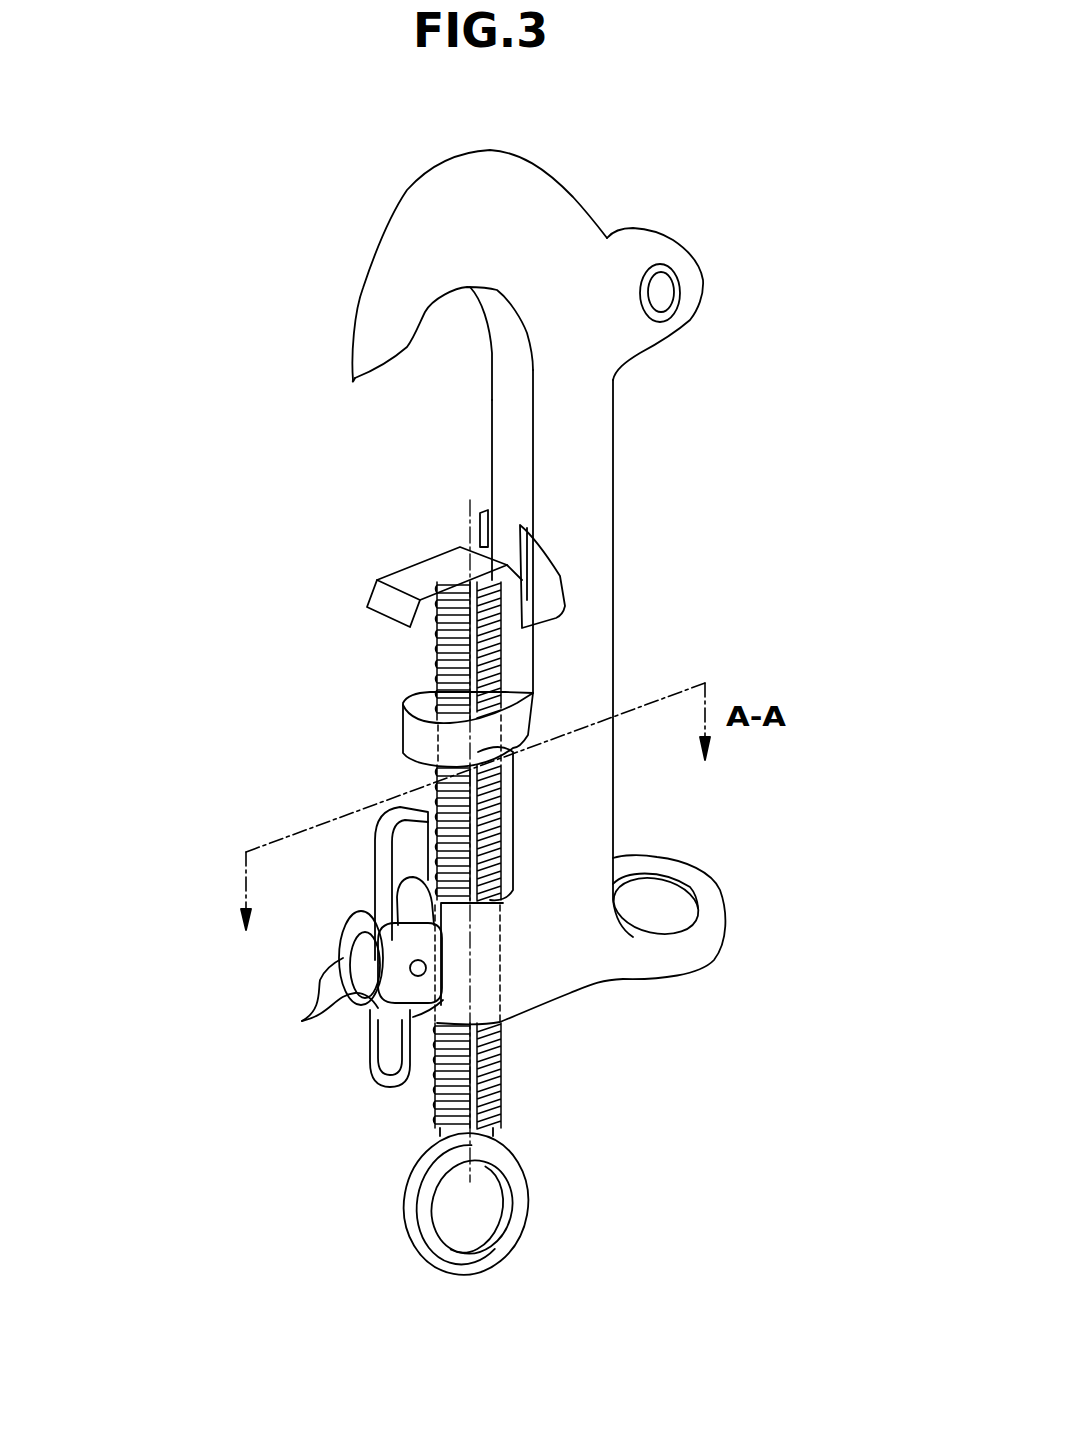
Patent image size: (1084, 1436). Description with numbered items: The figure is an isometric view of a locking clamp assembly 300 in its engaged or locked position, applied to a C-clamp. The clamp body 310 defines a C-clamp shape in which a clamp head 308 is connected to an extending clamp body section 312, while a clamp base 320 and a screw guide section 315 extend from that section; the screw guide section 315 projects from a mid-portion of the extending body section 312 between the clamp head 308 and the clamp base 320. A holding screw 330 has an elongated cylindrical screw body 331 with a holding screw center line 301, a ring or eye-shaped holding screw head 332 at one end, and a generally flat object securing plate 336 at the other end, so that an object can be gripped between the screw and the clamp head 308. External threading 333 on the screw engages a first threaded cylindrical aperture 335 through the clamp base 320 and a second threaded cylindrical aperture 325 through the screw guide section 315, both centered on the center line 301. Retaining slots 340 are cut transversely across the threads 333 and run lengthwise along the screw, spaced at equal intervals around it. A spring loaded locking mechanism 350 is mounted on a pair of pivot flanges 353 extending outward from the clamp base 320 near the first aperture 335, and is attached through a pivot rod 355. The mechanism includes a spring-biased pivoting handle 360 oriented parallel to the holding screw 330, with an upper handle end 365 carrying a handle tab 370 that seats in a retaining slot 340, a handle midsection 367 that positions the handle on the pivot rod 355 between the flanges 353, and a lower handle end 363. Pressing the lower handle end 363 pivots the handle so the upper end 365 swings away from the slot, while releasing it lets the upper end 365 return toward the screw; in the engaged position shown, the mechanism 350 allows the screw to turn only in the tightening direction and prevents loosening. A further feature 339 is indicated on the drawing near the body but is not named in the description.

The locking clamp assembly 300 is at (287, 136).
The holding screw center line 301 is at (475, 1207).
The clamp head 308 is at (373, 250).
The clamp body 310 is at (727, 380).
The extending clamp body section 312 is at (587, 472).
The screw guide section 315 is at (407, 730).
The clamp base 320 is at (653, 960).
The second threaded cylindrical holding screw aperture 325 is at (480, 735).
The holding screw 330 is at (407, 1175).
The screw body 331 is at (500, 1092).
The holding screw head 332 is at (487, 1253).
The external threading 333 is at (437, 1094).
The first threaded cylindrical holding screw aperture 335 is at (487, 967).
The object securing plate 336 is at (407, 573).
The slot 339 is at (386, 458).
The retaining slot 340 is at (492, 845).
The spring loaded locking mechanism 350 is at (208, 997).
The pivot flanges 353 is at (304, 1021).
The pivot rod 355 is at (420, 968).
The spring-biased pivoting handle 360 is at (350, 1039).
The lower handle end 363 is at (380, 1070).
The upper handle end 365 is at (410, 843).
The handle midsection 367 is at (382, 925).
The handle tab 370 is at (442, 800).